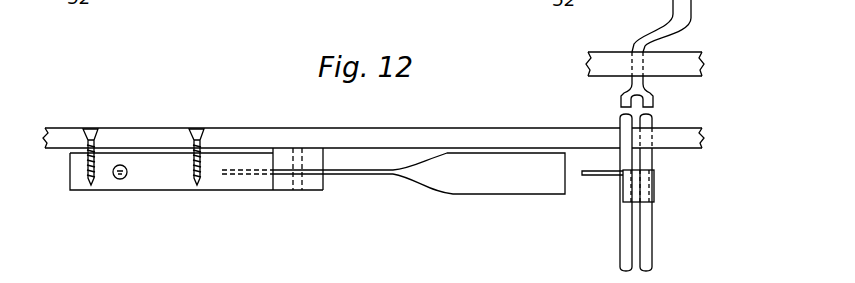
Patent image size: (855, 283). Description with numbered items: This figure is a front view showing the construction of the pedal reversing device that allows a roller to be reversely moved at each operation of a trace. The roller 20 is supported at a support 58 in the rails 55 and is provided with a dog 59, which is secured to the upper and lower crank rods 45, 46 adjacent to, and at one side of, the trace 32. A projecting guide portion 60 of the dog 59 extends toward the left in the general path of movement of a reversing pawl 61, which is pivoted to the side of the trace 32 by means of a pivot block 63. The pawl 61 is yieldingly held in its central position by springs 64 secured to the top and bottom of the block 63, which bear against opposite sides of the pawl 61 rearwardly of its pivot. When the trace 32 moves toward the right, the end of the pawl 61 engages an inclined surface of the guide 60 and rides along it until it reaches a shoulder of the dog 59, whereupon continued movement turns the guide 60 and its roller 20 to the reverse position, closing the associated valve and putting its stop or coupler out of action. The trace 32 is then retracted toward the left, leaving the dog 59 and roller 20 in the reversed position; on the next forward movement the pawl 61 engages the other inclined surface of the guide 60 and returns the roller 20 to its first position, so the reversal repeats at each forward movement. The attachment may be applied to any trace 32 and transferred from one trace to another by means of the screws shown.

The roller 20 is at (694, 1).
The trace 32 is at (505, 135).
The upper crank rod 45 is at (620, 238).
The lower crank rod 46 is at (653, 243).
The rail 55 is at (685, 60).
The roller support 58 is at (647, 66).
The dog 59 is at (655, 190).
The guide portion 60 is at (603, 178).
The reversing pawl 61 is at (503, 182).
The pivot block 63 is at (284, 158).
The spring 64 is at (158, 178).